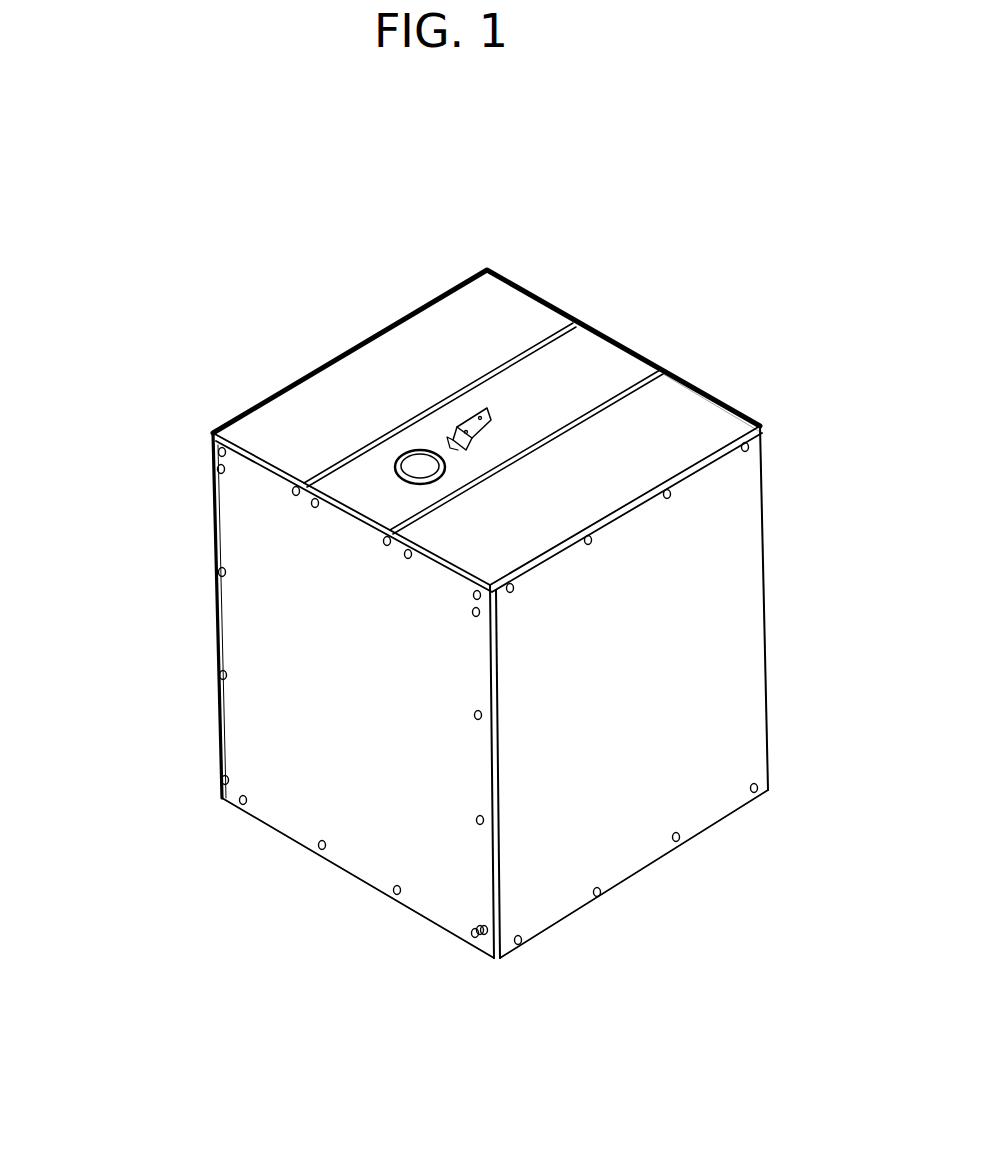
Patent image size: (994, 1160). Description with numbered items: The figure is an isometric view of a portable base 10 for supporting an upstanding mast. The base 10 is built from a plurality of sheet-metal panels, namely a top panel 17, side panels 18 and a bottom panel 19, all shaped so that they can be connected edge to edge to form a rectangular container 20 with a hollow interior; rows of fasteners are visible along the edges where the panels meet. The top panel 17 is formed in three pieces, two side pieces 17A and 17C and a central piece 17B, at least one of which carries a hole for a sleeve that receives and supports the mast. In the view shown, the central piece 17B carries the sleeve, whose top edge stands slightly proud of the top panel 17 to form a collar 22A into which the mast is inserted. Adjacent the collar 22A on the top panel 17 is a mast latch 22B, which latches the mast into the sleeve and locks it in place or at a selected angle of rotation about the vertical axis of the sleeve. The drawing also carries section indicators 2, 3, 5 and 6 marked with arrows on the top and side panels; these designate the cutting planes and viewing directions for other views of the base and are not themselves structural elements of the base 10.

The portable base 10 is at (173, 558).
The top panel 17 is at (443, 338).
The side piece of top panel 17A is at (497, 330).
The central piece of top panel 17B is at (617, 373).
The side piece of top panel 17C is at (690, 430).
The side panels 18 is at (632, 835).
The bottom panel 19 is at (730, 818).
The rectangular container 20 is at (362, 823).
The collar 22A is at (412, 485).
The mast latch 22B is at (472, 408).
The section line 2 is at (643, 327).
The section line 3 is at (293, 352).
The section line 5 is at (202, 730).
The section line 6 is at (453, 255).